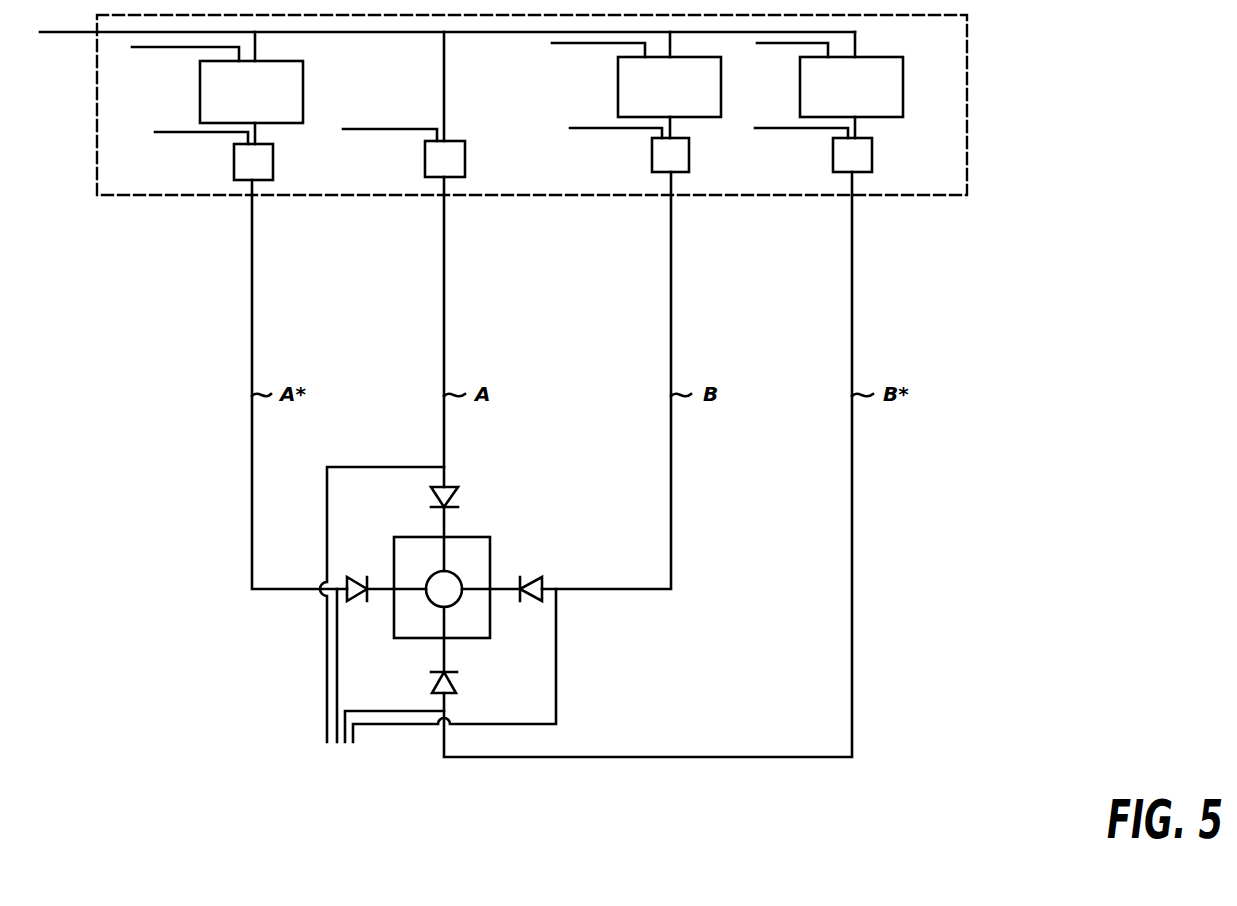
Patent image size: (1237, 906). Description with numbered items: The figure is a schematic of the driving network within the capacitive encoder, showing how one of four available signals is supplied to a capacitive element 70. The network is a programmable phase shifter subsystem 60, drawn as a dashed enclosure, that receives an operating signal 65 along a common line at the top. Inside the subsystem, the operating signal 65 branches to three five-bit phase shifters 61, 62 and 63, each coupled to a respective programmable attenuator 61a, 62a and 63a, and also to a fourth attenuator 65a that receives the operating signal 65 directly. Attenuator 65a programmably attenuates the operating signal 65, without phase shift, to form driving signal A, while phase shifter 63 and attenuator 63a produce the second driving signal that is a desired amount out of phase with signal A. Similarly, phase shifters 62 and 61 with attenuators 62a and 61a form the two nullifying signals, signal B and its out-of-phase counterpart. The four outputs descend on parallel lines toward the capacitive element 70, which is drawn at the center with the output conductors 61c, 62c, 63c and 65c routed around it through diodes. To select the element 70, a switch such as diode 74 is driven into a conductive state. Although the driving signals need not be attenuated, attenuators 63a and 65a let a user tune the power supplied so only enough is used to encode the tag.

The programmable phase shifter subsystem 60 is at (967, 108).
The phase shifter 61 is at (903, 86).
The programmable attenuator 61a is at (872, 157).
The output line 61c is at (396, 711).
The phase shifter 62 is at (721, 86).
The programmable attenuator 62a is at (689, 157).
The output line 62c is at (556, 669).
The phase shifter 63 is at (303, 94).
The programmable attenuator 63a is at (273, 163).
The output line 63c is at (337, 656).
The operating signal 65 is at (70, 33).
The attenuator 65a is at (465, 162).
The output line 65c is at (325, 677).
The capacitive element 70 is at (478, 536).
The diode 74 is at (455, 485).